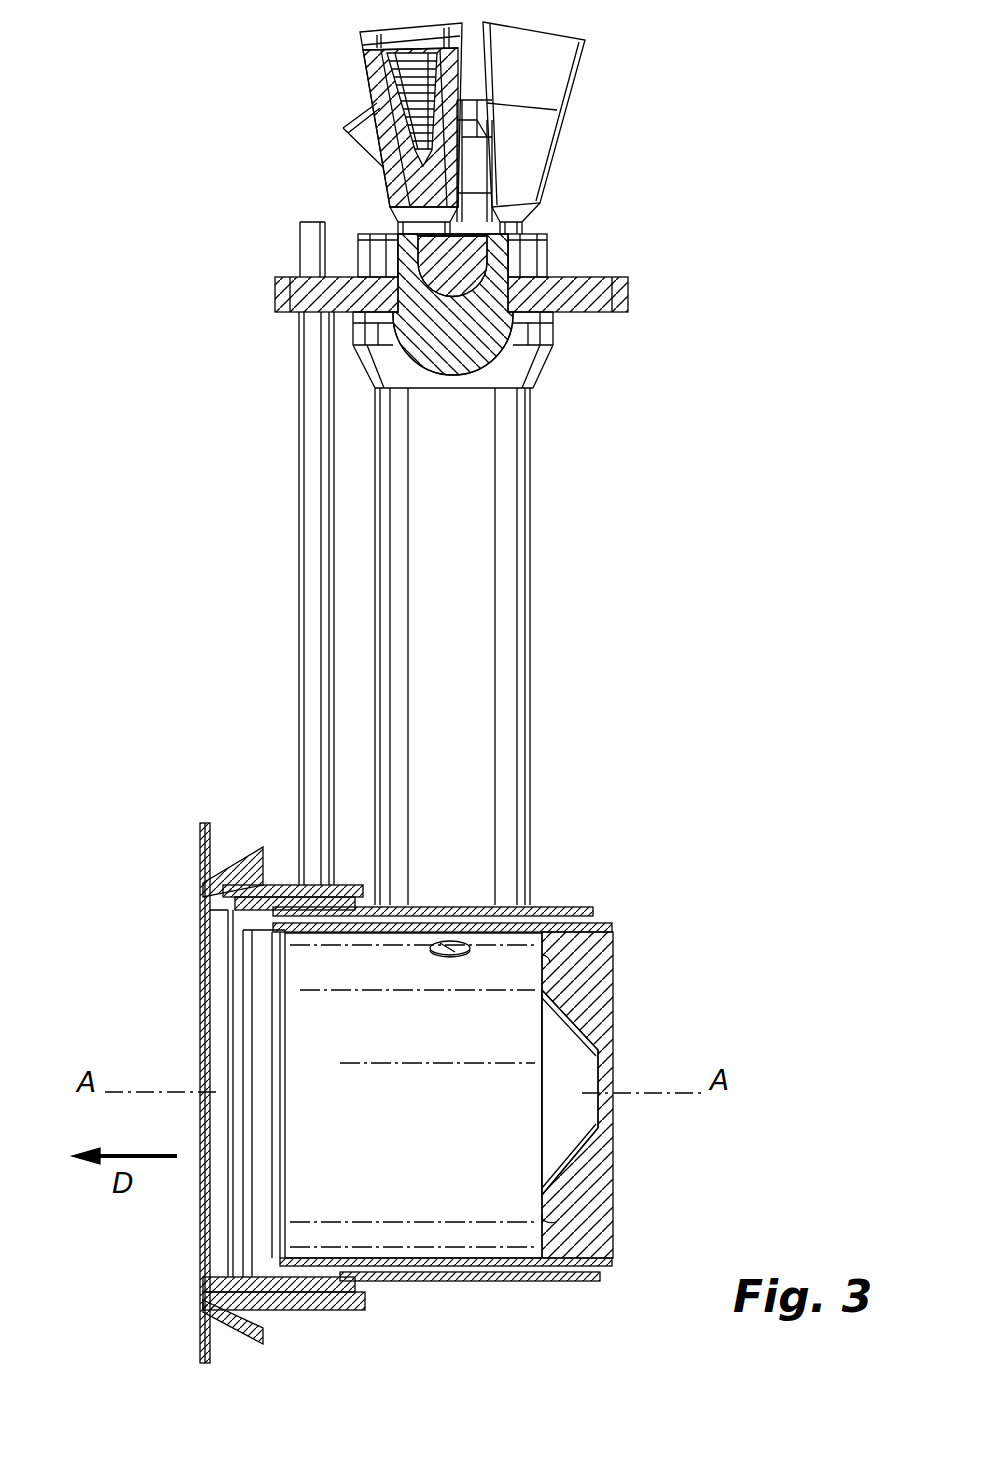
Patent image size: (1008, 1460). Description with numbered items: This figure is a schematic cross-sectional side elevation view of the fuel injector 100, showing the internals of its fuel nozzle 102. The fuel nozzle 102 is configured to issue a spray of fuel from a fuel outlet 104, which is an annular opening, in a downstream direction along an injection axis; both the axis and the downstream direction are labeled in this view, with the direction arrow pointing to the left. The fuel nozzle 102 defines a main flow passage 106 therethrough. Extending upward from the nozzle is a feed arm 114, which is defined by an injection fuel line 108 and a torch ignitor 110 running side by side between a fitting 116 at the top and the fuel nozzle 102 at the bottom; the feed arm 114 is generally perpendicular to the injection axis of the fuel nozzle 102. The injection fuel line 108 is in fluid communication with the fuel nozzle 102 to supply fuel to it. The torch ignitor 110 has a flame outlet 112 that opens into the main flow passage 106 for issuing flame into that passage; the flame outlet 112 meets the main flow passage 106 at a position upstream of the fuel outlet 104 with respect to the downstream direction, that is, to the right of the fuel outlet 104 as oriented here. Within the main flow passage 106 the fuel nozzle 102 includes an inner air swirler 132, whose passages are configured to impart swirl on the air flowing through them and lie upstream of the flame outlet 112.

The fuel injector 100 is at (122, 240).
The fuel nozzle 102 is at (322, 1313).
The fuel outlet 104 is at (207, 918).
The main flow passage 106 is at (441, 1110).
The injection fuel line 108 is at (307, 473).
The torch ignitor 110 is at (507, 532).
The flame outlet 112 is at (455, 955).
The feed arm 114 is at (540, 657).
The fitting 116 is at (572, 154).
The inner air swirler 132 is at (345, 932).